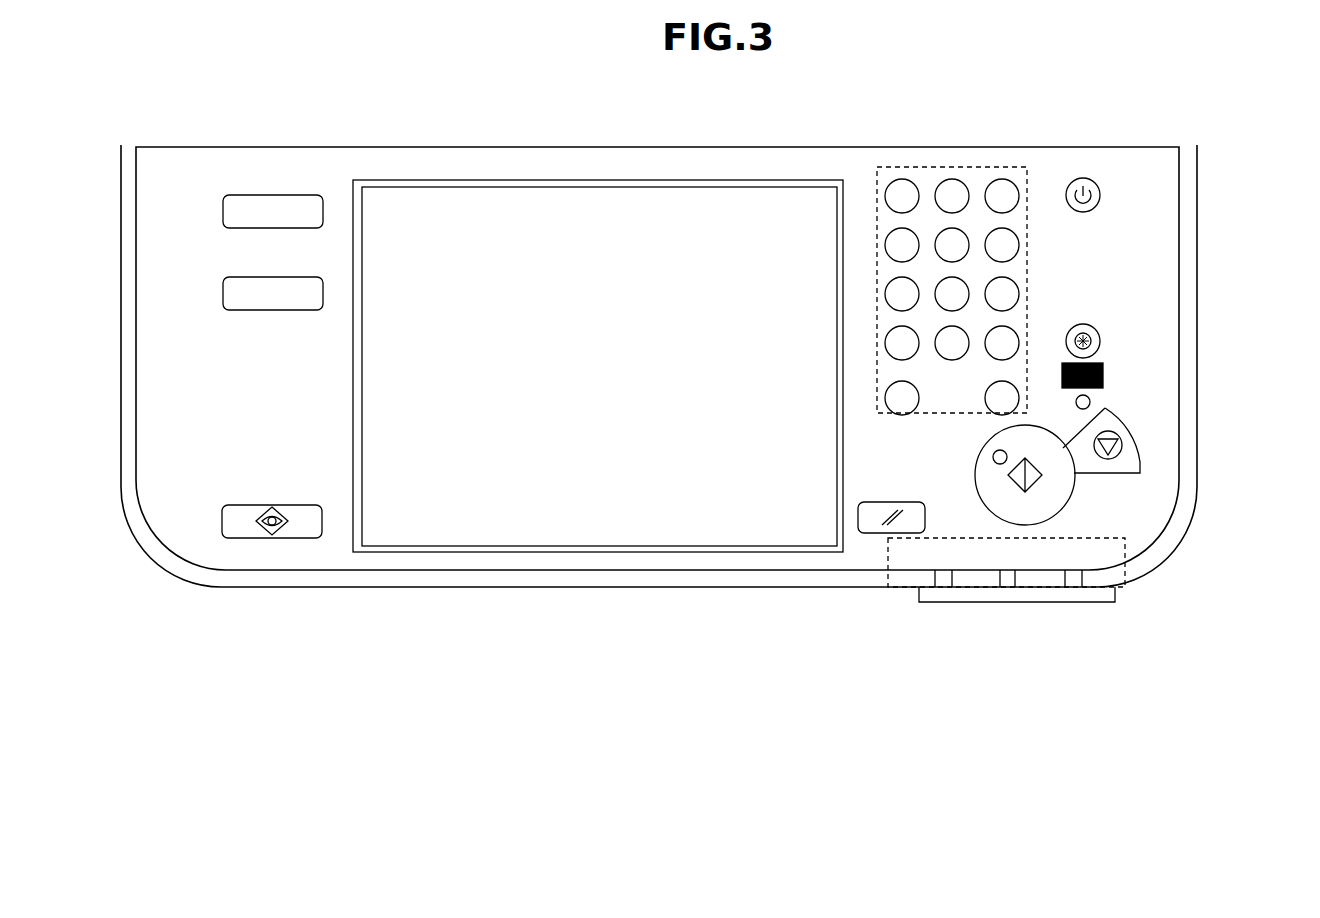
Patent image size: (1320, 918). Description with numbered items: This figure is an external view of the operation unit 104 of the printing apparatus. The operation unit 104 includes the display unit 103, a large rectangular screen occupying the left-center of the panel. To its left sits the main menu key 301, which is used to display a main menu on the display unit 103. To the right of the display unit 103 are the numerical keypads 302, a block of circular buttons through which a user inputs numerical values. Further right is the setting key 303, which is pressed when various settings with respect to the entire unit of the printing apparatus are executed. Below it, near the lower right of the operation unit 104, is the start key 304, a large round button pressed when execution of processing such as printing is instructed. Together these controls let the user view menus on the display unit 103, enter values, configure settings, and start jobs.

The operation unit 104 is at (455, 587).
The main menu key 301 is at (223, 211).
The display unit 103 is at (638, 212).
The numerical keypads 302 is at (932, 167).
The setting key 303 is at (1101, 340).
The start key 304 is at (1068, 500).